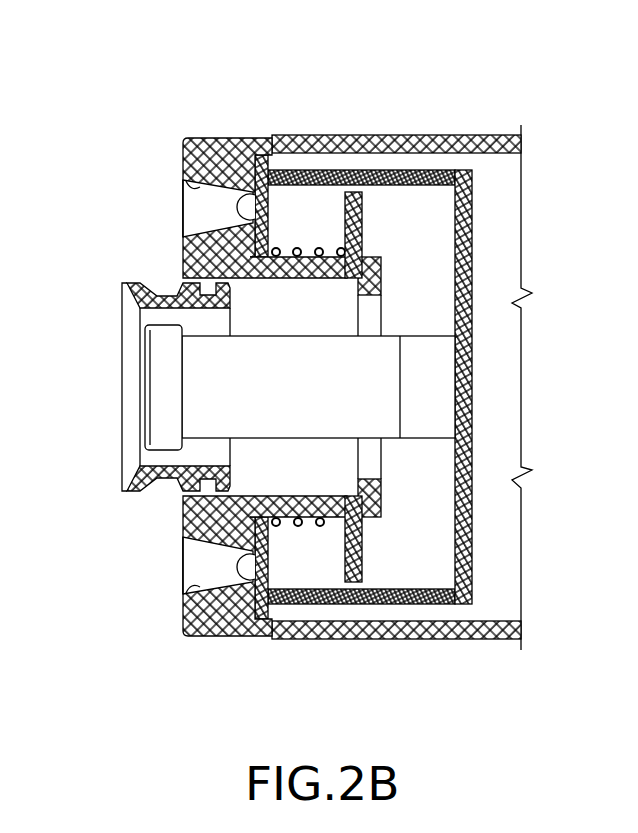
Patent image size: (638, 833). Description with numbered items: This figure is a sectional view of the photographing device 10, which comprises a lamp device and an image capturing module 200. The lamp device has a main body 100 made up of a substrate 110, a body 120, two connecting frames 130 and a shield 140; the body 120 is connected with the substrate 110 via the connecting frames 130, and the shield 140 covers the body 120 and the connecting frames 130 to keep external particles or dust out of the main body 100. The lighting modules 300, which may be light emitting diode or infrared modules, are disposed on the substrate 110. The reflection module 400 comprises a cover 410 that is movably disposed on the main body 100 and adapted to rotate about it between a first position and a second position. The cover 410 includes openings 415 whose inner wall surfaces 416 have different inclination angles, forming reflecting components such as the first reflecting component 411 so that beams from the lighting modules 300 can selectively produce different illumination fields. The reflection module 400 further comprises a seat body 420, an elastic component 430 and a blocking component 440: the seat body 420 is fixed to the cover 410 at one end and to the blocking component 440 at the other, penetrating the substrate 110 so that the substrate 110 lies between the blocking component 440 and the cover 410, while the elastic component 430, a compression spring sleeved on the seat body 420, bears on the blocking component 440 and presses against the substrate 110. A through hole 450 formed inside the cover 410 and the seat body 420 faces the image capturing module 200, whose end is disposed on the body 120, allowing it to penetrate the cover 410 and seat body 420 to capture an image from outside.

The photographing device 10 is at (51, 37).
The main body 100 is at (511, 127).
The substrate 110 is at (268, 200).
The body 120 is at (466, 267).
The connecting frame 130 is at (363, 176).
The shield 140 is at (482, 140).
The image capturing module 200 is at (155, 373).
The lighting module 300 is at (240, 206).
The reflection module 400 is at (178, 133).
The cover 410 is at (220, 147).
The first reflecting component 411 is at (163, 213).
The opening 415 is at (208, 226).
The inner wall surface 416 is at (183, 183).
The seat body 420 is at (305, 263).
The elastic component 430 is at (300, 525).
The blocking component 440 is at (357, 552).
The through hole 450 is at (300, 322).